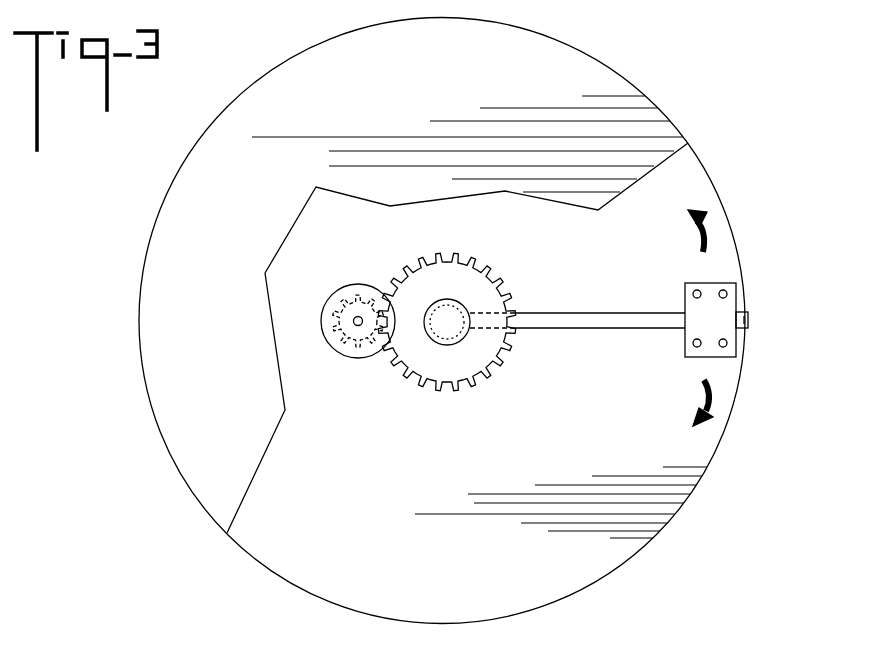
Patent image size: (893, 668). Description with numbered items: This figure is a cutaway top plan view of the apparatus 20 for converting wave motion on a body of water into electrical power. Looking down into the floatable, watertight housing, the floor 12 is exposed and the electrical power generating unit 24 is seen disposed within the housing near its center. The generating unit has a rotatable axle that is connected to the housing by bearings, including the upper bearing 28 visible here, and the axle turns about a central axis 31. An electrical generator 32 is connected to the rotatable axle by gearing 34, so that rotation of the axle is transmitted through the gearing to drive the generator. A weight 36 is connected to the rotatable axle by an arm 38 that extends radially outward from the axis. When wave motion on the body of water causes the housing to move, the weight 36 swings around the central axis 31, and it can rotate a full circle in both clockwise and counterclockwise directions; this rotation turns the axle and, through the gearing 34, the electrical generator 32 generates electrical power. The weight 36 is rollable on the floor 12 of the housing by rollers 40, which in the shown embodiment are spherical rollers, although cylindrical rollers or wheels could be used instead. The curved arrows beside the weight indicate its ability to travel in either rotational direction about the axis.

The floor 12 is at (556, 471).
The apparatus 20 is at (706, 66).
The electrical power generating unit 24 is at (615, 275).
The upper bearing 28 is at (463, 307).
The central axis 31 is at (446, 320).
The electrical generator 32 is at (338, 304).
The gearing 34 is at (387, 333).
The weight 36 is at (713, 288).
The arm 38 is at (547, 318).
The rollers 40 is at (725, 298).